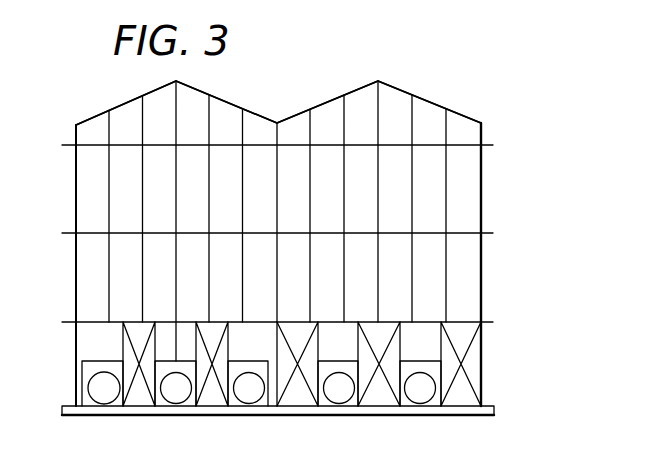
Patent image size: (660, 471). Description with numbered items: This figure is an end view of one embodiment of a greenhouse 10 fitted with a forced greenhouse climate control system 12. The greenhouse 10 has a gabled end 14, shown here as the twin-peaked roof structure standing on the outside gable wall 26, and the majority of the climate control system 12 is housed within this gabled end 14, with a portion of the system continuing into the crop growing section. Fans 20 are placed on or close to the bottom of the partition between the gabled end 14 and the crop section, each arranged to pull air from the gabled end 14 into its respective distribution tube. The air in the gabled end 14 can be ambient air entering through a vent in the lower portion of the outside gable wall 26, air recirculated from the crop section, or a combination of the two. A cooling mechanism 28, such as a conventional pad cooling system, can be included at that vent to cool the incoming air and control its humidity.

The greenhouse 10 is at (527, 120).
The greenhouse climate control system 12 is at (450, 366).
The gabled end 14 is at (400, 90).
The fans 20 is at (105, 397).
The outside gable wall 26 is at (468, 183).
The cooling mechanism 28 is at (421, 397).